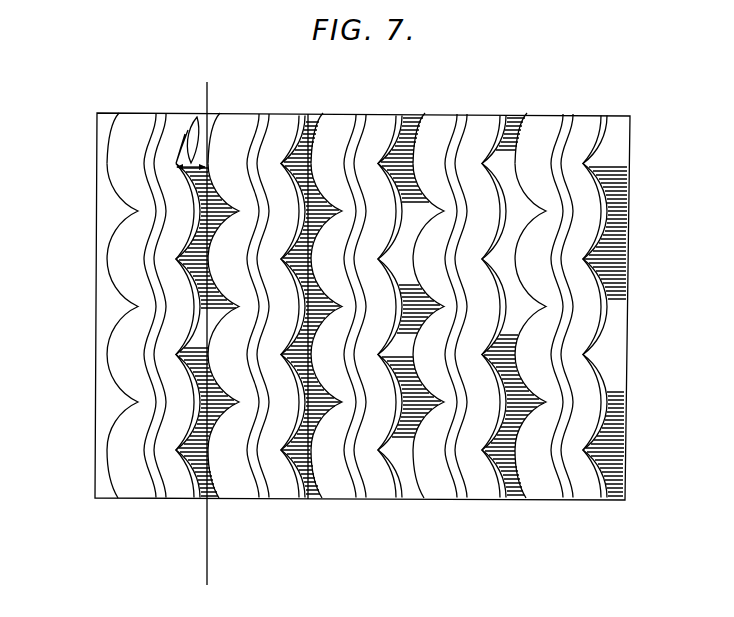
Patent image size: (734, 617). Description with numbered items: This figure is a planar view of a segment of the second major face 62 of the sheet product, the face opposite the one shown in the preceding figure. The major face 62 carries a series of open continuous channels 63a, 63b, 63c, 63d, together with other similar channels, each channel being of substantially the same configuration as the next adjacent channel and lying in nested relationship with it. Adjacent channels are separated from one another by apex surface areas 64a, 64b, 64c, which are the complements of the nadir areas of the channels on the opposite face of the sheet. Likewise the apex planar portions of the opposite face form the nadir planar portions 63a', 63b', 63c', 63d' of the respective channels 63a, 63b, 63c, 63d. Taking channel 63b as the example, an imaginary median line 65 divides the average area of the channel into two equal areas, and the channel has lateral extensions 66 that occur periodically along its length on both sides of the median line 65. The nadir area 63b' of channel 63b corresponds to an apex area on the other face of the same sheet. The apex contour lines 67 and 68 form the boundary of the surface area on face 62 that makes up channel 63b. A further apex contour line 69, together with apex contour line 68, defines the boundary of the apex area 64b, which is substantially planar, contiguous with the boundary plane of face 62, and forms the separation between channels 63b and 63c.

The major face 62 is at (98, 463).
The channel 63a is at (112, 362).
The nadir planar portion 63a' is at (129, 115).
The channel 63b is at (230, 370).
The nadir area 63b' is at (249, 108).
The channel 63c is at (316, 363).
The nadir planar portion 63c' is at (340, 120).
The channel 63d is at (424, 363).
The nadir planar portion 63d' is at (441, 120).
The apex surface area 64a is at (163, 499).
The apex area 64b is at (252, 465).
The apex surface area 64c is at (362, 480).
The imaginary median line 65 is at (207, 563).
The lateral extensions 66 is at (206, 127).
The apex contour line 67 is at (168, 138).
The apex contour line 68 is at (272, 128).
The apex contour line 69 is at (283, 124).